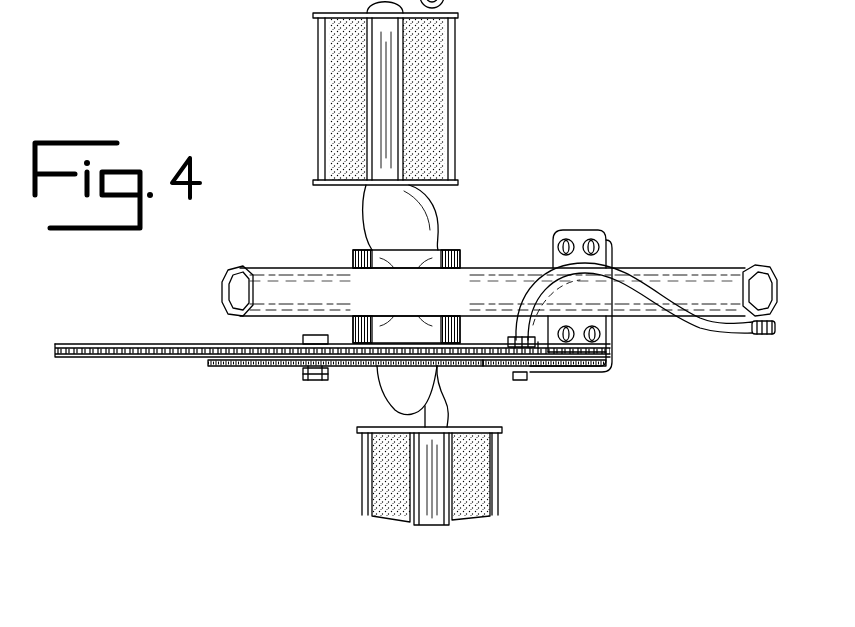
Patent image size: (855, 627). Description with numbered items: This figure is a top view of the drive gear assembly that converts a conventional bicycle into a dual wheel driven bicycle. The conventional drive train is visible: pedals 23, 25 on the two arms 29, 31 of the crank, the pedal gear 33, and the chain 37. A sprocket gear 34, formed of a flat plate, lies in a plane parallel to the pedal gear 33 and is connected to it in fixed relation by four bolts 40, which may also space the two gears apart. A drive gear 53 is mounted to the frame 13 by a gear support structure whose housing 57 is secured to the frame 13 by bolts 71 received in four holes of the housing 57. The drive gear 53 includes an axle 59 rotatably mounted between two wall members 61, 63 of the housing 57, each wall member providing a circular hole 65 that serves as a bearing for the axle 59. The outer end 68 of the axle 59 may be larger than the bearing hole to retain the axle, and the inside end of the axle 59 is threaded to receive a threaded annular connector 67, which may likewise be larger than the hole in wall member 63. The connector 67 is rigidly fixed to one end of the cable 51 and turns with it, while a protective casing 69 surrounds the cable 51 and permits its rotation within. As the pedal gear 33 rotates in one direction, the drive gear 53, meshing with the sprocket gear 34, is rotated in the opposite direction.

The frame 13 is at (353, 262).
The pedal 23 is at (438, 53).
The pedal 25 is at (482, 493).
The crank arm 29 is at (375, 227).
The crank arm 31 is at (437, 393).
The pedal gear 33 is at (332, 313).
The sprocket gear 34 is at (268, 368).
The chain 37 is at (107, 345).
The bolts 40 is at (338, 366).
The cable 51 is at (768, 338).
The drive gear 53 is at (540, 368).
The housing 57 is at (593, 330).
The axle 59 is at (515, 343).
The wall member 61 is at (586, 375).
The wall member 63 is at (585, 362).
The circular hole 65 is at (593, 276).
The threaded annular connector 67 is at (546, 336).
The outer end of axle 68 is at (523, 380).
The protective casing 69 is at (720, 336).
The bolts 71 is at (591, 238).